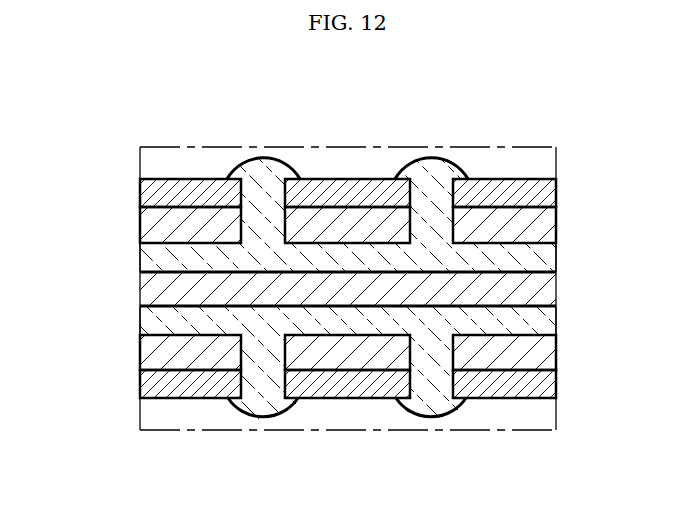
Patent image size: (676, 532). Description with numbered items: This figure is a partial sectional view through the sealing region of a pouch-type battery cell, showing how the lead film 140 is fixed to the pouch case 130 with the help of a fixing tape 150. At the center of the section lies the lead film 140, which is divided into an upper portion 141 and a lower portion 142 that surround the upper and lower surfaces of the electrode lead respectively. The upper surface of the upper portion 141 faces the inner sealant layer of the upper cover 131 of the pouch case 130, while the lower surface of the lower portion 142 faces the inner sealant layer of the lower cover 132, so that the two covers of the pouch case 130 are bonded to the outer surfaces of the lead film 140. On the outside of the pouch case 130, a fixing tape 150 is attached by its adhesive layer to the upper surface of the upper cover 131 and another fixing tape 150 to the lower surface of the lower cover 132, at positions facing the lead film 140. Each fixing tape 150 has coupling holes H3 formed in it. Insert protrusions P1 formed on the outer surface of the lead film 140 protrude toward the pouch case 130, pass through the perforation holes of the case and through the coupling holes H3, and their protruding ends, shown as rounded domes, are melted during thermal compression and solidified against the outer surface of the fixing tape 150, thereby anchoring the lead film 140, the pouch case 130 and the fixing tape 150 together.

The pouch case 130 is at (612, 215).
The upper cover 131 is at (557, 221).
The lower cover 132 is at (557, 350).
The lead film 140 is at (82, 245).
The upper portion 141 is at (139, 262).
The lower portion 142 is at (139, 328).
The fixing tape 150 is at (557, 193).
The coupling hole H3 is at (247, 192).
The insert protrusion P1 is at (427, 160).